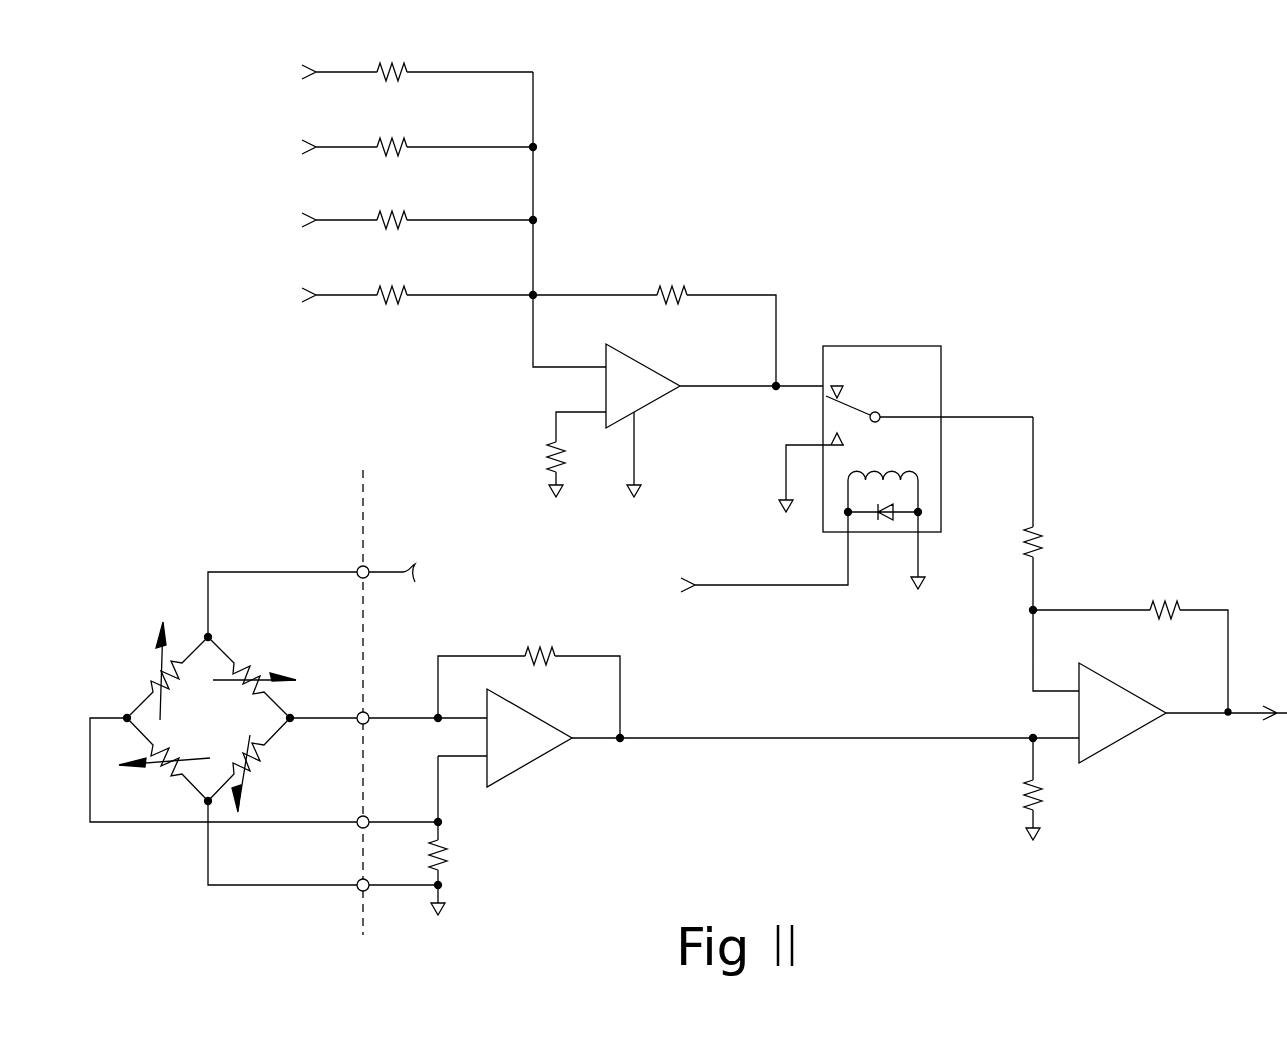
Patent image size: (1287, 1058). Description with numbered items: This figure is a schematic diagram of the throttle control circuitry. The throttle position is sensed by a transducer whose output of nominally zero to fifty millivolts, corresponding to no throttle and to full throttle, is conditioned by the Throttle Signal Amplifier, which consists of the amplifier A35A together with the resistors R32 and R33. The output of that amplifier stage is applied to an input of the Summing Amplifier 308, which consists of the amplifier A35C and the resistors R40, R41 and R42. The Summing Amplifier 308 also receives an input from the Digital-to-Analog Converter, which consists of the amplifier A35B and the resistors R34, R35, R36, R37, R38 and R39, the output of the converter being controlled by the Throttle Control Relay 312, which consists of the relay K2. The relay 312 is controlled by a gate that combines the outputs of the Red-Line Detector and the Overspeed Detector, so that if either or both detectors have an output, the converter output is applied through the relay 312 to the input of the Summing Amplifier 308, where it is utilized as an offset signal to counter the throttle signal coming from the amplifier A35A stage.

The resistor R32 is at (531, 684).
The resistor R33 is at (462, 835).
The resistor R34 is at (417, 61).
The resistor R35 is at (417, 137).
The resistor R36 is at (417, 210).
The resistor R37 is at (417, 284).
The resistor R38 is at (654, 324).
The resistor R39 is at (578, 454).
The resistor R40 is at (1053, 513).
The resistor R41 is at (1129, 646).
The resistor R42 is at (1054, 788).
The amplifier A35A is at (504, 746).
The amplifier A35B is at (714, 420).
The amplifier A35C is at (1160, 691).
The relay K2 is at (857, 457).
The throttle control relay 312 is at (942, 383).
The summing amplifier 308 is at (1150, 680).